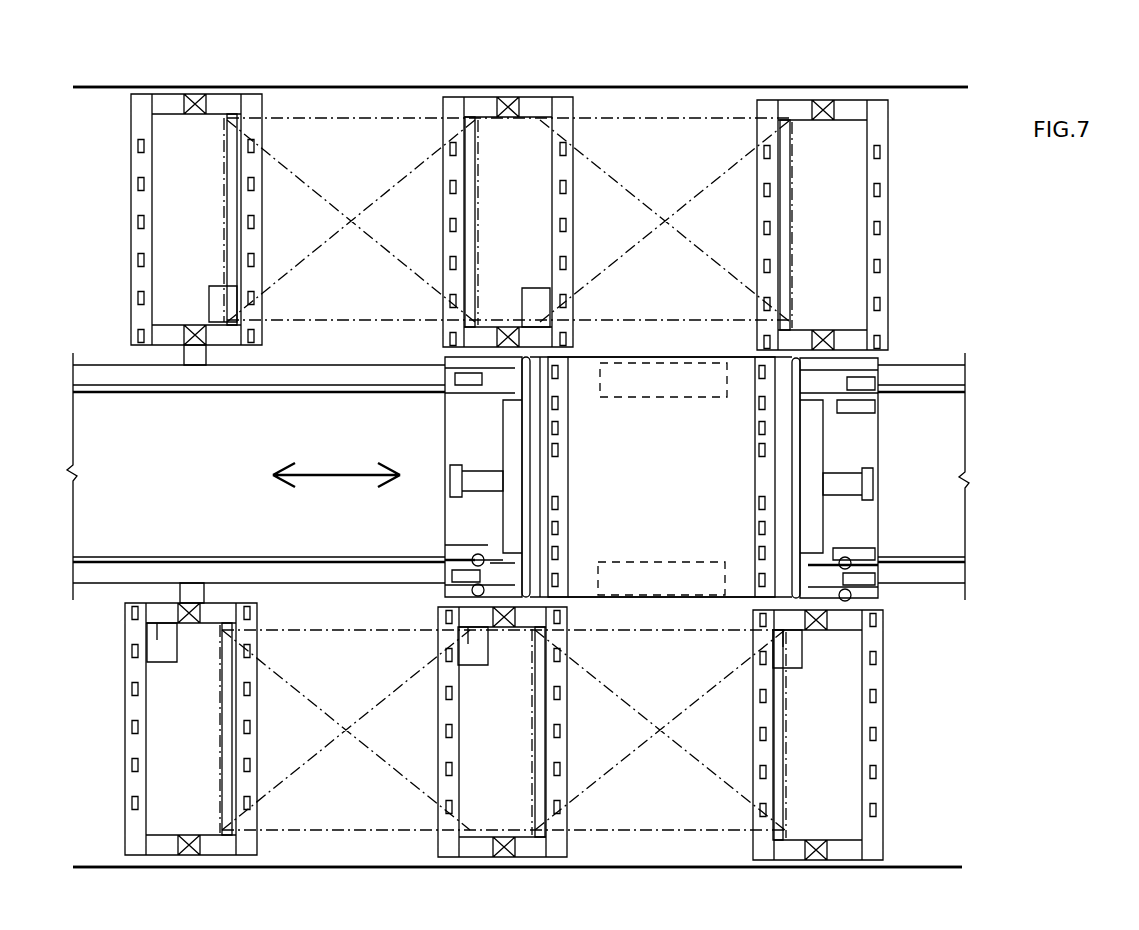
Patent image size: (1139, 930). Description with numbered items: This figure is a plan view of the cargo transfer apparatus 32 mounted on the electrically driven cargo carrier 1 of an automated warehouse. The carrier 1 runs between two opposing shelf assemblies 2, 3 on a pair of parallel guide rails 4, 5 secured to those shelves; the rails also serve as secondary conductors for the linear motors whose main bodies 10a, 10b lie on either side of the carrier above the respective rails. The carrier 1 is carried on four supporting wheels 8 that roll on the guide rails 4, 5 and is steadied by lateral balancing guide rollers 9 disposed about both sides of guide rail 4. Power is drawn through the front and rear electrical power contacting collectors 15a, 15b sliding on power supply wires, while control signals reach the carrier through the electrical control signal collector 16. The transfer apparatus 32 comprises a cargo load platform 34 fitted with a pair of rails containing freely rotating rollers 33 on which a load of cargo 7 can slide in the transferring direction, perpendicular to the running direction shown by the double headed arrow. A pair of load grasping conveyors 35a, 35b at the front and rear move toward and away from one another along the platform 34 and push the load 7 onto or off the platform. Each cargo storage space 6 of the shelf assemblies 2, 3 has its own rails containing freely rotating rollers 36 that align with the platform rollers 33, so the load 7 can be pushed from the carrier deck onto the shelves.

The electrically driven cargo carrier 1 is at (697, 454).
The shelf assembly 2 is at (896, 683).
The shelf assembly 3 is at (900, 187).
The guide rail 4 is at (193, 572).
The guide rail 5 is at (168, 375).
The cargo storage space 6 is at (356, 184).
The load of cargo 7 is at (790, 248).
The supporting wheel 8 is at (443, 393).
The lateral balancing guide roller 9 is at (483, 587).
The linear motor main body 10a is at (645, 572).
The linear motor main body 10b is at (658, 355).
The electrical power contacting collector 15a is at (880, 566).
The electrical power contacting collector 15b is at (443, 548).
The electrical control signal collector 16 is at (847, 447).
The cargo transfer apparatus 32 is at (808, 488).
The rails containing freely rotating rollers 33 is at (565, 448).
The cargo load platform 34 is at (676, 486).
The load grasping conveyor 35a is at (857, 473).
The load grasping conveyor 35b is at (517, 505).
The rails containing freely rotating rollers 36 is at (562, 190).